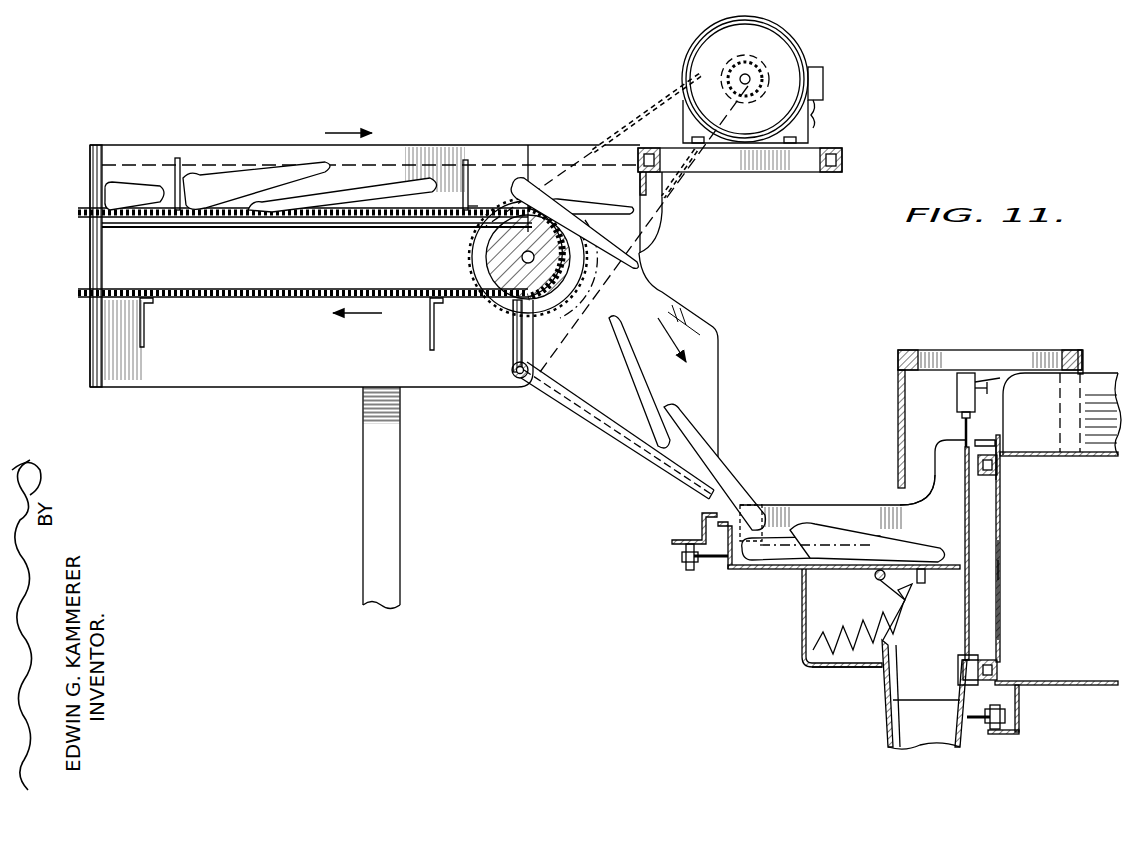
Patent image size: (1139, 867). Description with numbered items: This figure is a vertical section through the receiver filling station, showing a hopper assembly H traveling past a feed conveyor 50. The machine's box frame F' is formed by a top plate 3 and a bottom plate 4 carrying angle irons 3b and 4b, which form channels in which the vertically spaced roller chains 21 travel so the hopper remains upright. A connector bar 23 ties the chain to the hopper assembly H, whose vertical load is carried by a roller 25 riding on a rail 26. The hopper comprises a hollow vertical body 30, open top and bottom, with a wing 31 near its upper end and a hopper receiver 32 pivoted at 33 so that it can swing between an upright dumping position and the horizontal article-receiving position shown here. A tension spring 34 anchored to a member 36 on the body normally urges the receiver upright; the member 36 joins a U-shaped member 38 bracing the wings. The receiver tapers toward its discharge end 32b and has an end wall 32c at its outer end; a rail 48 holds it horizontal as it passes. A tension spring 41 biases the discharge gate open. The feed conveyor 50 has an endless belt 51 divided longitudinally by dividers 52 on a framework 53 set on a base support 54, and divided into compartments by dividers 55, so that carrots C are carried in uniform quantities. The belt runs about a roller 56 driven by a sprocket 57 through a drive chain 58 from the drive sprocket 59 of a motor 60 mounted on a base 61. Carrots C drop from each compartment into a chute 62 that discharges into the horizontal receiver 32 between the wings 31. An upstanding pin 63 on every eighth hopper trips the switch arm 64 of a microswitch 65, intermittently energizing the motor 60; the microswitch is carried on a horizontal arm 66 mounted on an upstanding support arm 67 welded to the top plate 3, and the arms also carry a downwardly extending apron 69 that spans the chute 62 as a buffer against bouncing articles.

The top plate 3 is at (1102, 458).
The angle iron 3b is at (999, 482).
The bottom plate 4 is at (1100, 681).
The angle iron 4b is at (972, 661).
The roller chains 21 is at (1000, 468).
The connector bar 23 is at (966, 458).
The roller 25 is at (999, 733).
The angle iron or rail 26 is at (1022, 733).
The hopper body 30 is at (1001, 591).
The wings 31 is at (838, 505).
The hopper receiver 32 is at (766, 570).
The discharge end 32b is at (960, 575).
The end wall 32c is at (689, 571).
The pivot 33 is at (873, 579).
The tension spring 34 is at (862, 624).
The member 36 is at (840, 670).
The U-shaped member 38 is at (801, 630).
The tension spring 41 is at (966, 747).
The rail 48 is at (678, 540).
The feed conveyor 50 is at (268, 328).
The endless belt 51 is at (78, 211).
The dividers 52 is at (445, 160).
The framework 53 is at (452, 378).
The base support 54 is at (400, 494).
The dividers 55 is at (178, 158).
The roller 56 is at (492, 259).
The sprocket 57 is at (536, 258).
The drive chain 58 is at (648, 118).
The drive sprocket 59 is at (705, 76).
The motor 60 is at (788, 38).
The base 61 is at (843, 148).
The chute 62 is at (606, 406).
The upstanding pin 63 is at (962, 428).
The switch arm 64 is at (974, 414).
The microswitch 65 is at (957, 396).
The horizontally extended arm 66 is at (997, 350).
The upstanding support arm 67 is at (1085, 362).
The apron 69 is at (898, 406).
The carrots C is at (222, 182).
The hopper assembly H is at (1002, 621).
The box frame F' is at (1037, 559).